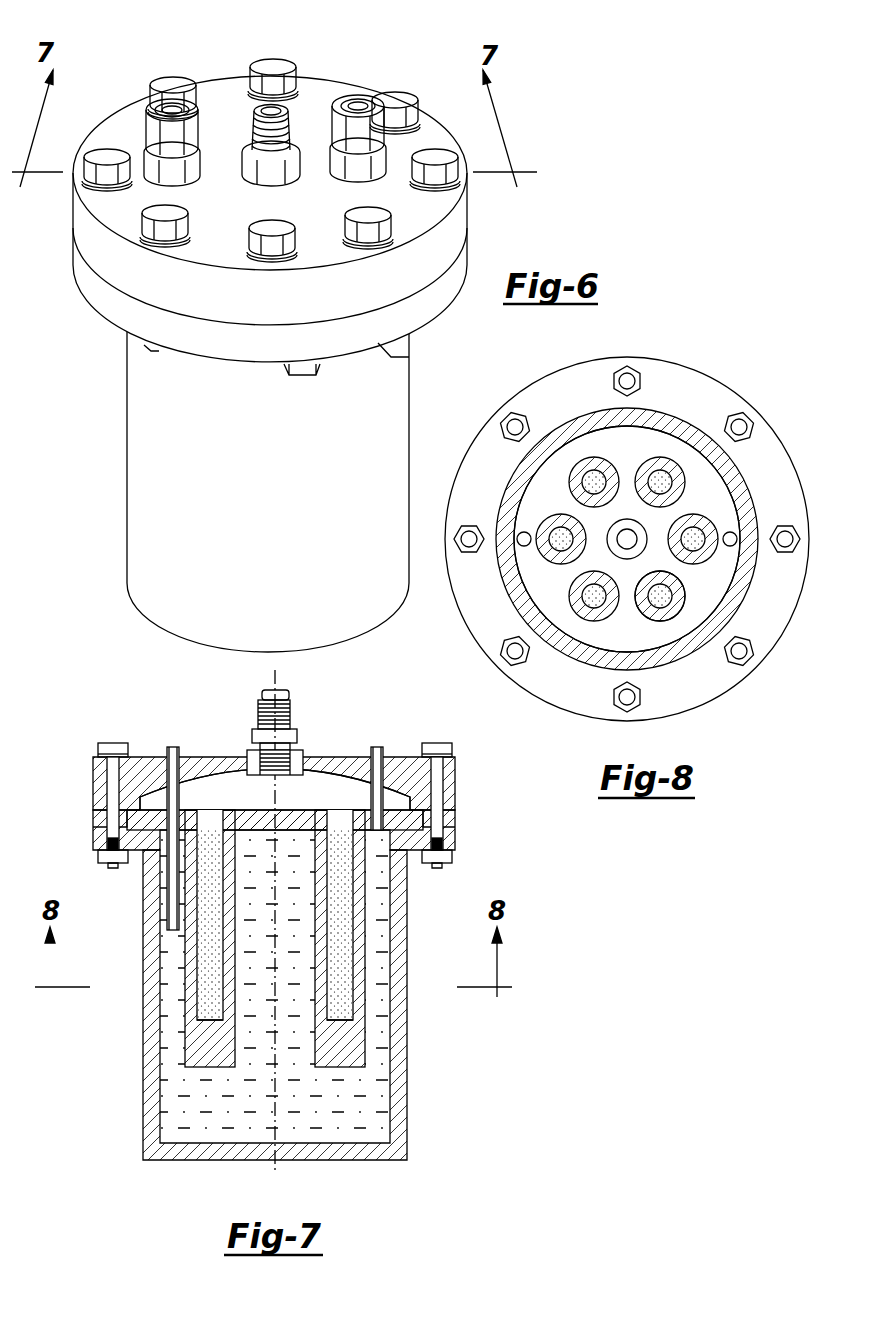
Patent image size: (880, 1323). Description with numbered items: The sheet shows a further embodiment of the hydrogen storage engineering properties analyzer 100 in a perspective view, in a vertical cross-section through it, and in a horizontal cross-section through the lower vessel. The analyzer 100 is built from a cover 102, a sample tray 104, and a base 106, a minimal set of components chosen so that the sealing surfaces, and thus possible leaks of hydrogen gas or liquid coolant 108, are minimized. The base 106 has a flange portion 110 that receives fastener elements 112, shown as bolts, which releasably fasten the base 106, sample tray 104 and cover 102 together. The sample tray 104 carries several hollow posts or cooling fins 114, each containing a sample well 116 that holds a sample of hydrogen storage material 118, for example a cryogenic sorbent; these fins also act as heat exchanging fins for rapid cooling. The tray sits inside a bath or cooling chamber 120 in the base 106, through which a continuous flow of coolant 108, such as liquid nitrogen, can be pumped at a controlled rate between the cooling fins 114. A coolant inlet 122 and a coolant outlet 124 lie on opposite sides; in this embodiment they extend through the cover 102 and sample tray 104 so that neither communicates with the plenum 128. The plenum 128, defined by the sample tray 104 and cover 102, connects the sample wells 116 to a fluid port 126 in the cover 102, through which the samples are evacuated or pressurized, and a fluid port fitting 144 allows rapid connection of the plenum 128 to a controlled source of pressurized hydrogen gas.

In FIG. 6, the hydrogen storage engineering properties analyzer 100 is at (487, 236).
In FIG. 6, the cover 102 is at (219, 84).
In FIG. 7, the cover 102 is at (206, 757).
In FIG. 7, the sample tray 104 is at (287, 811).
In FIG. 6, the base 106 is at (133, 443).
In FIG. 8, the base 106 is at (745, 592).
In FIG. 7, the base 106 is at (407, 1048).
In FIG. 7, the coolant 108 is at (252, 1102).
In FIG. 6, the flange portion 110 is at (126, 318).
In FIG. 8, the flange portion 110 is at (781, 437).
In FIG. 7, the flange portion 110 is at (456, 838).
In FIG. 6, the fastener elements 112 is at (362, 215).
In FIG. 8, the fastener elements 112 is at (641, 380).
In FIG. 7, the fastener elements 112 is at (100, 752).
In FIG. 8, the cooling fins 114 is at (662, 605).
In FIG. 7, the cooling fins 114 is at (190, 1045).
In FIG. 8, the sample wells 116 is at (660, 482).
In FIG. 7, the sample wells 116 is at (204, 968).
In FIG. 7, the hydrogen storage material 118 is at (230, 951).
In FIG. 8, the cooling chamber 120 is at (585, 450).
In FIG. 7, the cooling chamber 120 is at (358, 1095).
In FIG. 6, the coolant inlet 122 is at (172, 108).
In FIG. 8, the coolant inlet 122 is at (524, 546).
In FIG. 7, the coolant inlet 122 is at (169, 755).
In FIG. 6, the coolant outlet 124 is at (358, 105).
In FIG. 8, the coolant outlet 124 is at (728, 535).
In FIG. 7, the coolant outlet 124 is at (378, 750).
In FIG. 6, the fluid port 126 is at (272, 110).
In FIG. 8, the fluid port 126 is at (622, 535).
In FIG. 7, the fluid port 126 is at (277, 690).
In FIG. 7, the plenum 128 is at (247, 802).
In FIG. 7, the fluid port fitting 144 is at (291, 715).